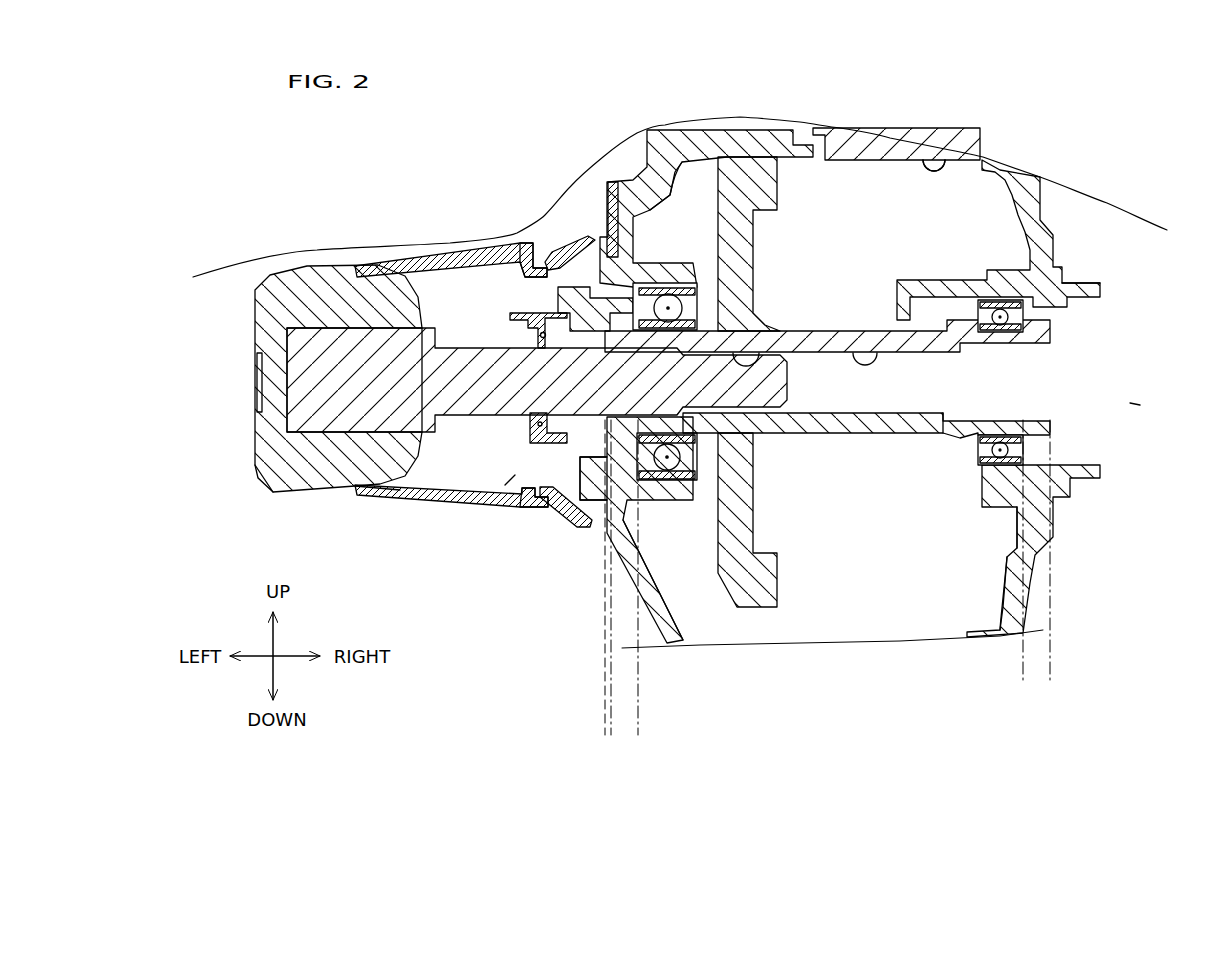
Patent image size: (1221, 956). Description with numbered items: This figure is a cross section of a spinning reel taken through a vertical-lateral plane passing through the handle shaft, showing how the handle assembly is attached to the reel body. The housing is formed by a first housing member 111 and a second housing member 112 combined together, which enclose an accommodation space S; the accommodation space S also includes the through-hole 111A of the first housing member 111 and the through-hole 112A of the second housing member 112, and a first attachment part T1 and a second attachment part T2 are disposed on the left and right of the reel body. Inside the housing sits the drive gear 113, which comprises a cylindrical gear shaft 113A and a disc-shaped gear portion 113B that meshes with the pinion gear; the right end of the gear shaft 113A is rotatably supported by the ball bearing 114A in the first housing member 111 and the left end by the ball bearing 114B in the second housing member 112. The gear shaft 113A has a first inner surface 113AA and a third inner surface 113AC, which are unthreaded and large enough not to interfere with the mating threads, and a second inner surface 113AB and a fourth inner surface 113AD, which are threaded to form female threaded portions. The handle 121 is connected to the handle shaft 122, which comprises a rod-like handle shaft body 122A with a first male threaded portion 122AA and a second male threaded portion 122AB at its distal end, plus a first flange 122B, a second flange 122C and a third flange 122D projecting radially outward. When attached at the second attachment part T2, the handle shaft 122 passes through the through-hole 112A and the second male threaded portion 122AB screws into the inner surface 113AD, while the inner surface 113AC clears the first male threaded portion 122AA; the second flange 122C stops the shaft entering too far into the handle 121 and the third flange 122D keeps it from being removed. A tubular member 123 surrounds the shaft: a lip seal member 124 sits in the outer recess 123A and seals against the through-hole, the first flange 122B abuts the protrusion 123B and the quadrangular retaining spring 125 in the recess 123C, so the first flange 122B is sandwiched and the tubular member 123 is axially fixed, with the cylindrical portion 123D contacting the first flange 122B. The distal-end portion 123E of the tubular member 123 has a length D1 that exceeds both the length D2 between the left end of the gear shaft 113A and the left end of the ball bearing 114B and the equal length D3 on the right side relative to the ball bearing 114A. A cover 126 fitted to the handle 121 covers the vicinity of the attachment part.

The first housing member 111 is at (1070, 505).
The through-hole 111A is at (1067, 303).
The second housing member 112 is at (730, 130).
The through-hole 112A is at (573, 308).
The drive gear 113 is at (829, 183).
The gear shaft 113A is at (927, 435).
The first inner surface 113AA is at (980, 298).
The second inner surface 113AB is at (845, 328).
The third inner surface 113AC is at (735, 350).
The fourth inner surface 113AD is at (627, 257).
The gear portion 113B is at (752, 596).
The ball bearing 114A is at (1000, 520).
The ball bearing 114B is at (682, 500).
The handle 121 is at (322, 462).
The handle shaft 122 is at (310, 292).
The handle shaft body 122A is at (258, 383).
The first male threaded portion 122AA is at (763, 443).
The second male threaded portion 122AB is at (692, 445).
The first flange 122B is at (540, 445).
The second flange 122C is at (533, 428).
The third flange 122D is at (268, 478).
The tubular member 123 is at (513, 308).
The recess 123A is at (573, 495).
The protrusion 123B is at (597, 262).
The recess 123C is at (535, 496).
The cylindrical portion 123D is at (524, 257).
The distal-end portion 123E is at (672, 305).
The lip seal member 124 is at (572, 495).
The retaining spring 125 is at (538, 313).
The cover 126 is at (397, 478).
The accommodation space S is at (927, 128).
The first attachment part T1 is at (1132, 403).
The second attachment part T2 is at (516, 472).
The length of the distal-end portion D1 is at (668, 727).
The length D2 is at (668, 697).
The length D3 is at (993, 668).